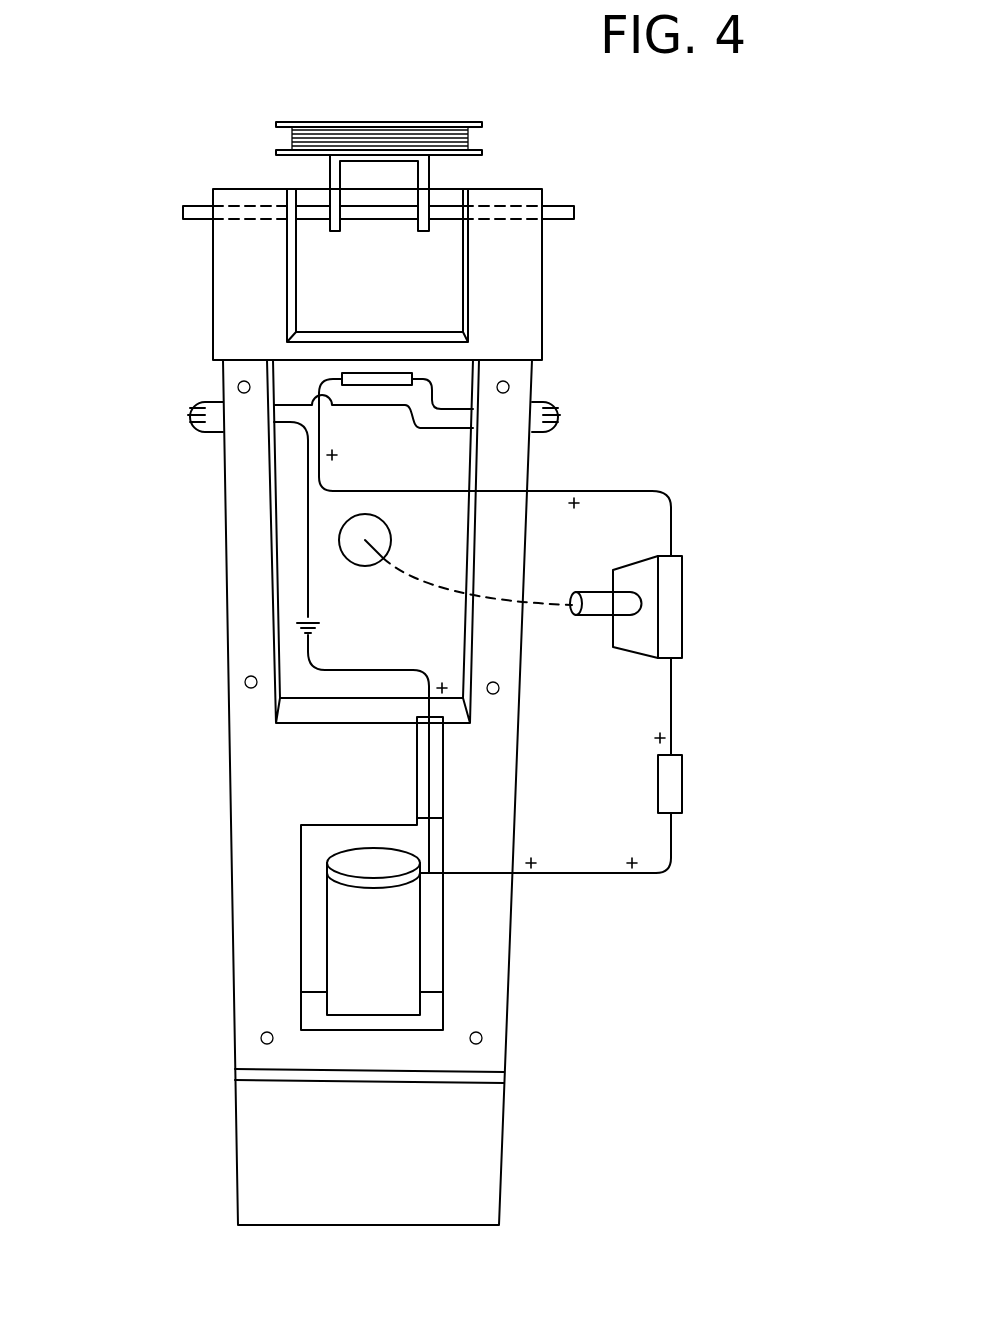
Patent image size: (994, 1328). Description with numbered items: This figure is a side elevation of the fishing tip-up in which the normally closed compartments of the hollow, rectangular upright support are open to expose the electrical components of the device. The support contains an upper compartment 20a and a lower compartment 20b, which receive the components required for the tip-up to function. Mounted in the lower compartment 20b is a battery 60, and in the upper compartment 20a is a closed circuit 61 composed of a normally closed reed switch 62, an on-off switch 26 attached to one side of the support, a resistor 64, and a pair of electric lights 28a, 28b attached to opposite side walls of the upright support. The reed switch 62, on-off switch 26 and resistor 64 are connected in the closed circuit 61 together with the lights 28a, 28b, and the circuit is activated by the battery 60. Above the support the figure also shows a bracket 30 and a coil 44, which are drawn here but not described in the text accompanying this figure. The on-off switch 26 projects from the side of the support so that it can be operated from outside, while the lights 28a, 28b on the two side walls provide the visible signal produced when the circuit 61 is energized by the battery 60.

The upper compartment 20a is at (275, 618).
The lower compartment 20b is at (301, 907).
The on-off switch 26 is at (683, 603).
The electric light 28a is at (192, 403).
The electric light 28b is at (558, 411).
The core bracket 30 is at (325, 172).
The coil 44 is at (470, 137).
The battery 60 is at (420, 957).
The closed circuit 61 is at (308, 531).
The reed switch 62 is at (390, 373).
The resistor 64 is at (682, 781).